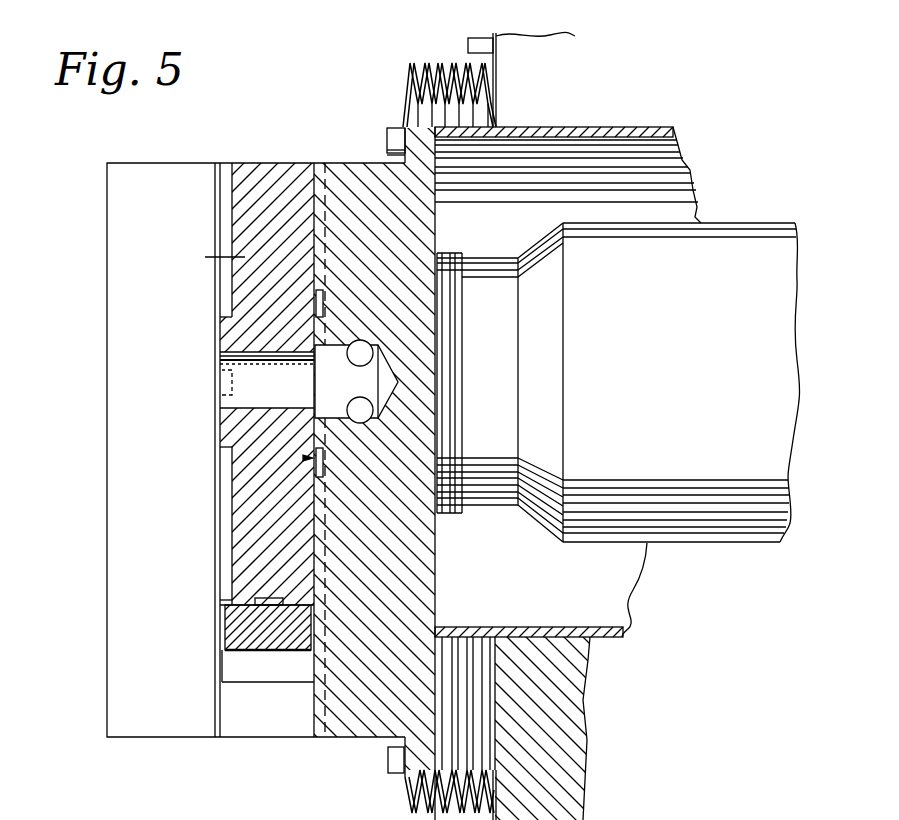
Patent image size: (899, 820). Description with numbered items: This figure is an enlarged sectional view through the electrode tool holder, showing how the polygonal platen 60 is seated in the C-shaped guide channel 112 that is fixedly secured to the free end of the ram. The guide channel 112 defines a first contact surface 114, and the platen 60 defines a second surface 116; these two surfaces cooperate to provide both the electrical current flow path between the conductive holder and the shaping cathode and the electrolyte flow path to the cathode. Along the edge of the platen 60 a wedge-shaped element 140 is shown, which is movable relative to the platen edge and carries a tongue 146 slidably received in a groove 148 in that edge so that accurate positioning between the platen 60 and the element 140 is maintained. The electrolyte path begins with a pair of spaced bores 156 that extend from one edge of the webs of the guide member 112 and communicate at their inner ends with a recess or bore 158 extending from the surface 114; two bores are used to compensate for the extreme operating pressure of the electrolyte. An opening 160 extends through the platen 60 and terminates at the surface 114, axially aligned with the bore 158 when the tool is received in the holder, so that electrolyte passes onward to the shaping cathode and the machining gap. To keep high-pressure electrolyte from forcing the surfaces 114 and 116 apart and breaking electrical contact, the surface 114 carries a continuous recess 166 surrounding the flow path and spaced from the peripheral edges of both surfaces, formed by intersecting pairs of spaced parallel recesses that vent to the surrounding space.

The platen 60 is at (258, 553).
The C-shaped guide channel 112 is at (133, 392).
The first contact surface 114 is at (305, 523).
The second surface 116 is at (318, 502).
The wedge-shaped element 140 is at (238, 636).
The tongue 146 is at (232, 600).
The groove 148 is at (270, 600).
The spaced bores 156 is at (362, 340).
The recess or bore 158 is at (331, 368).
The opening 160 is at (232, 364).
The continuous recess 166 is at (240, 462).